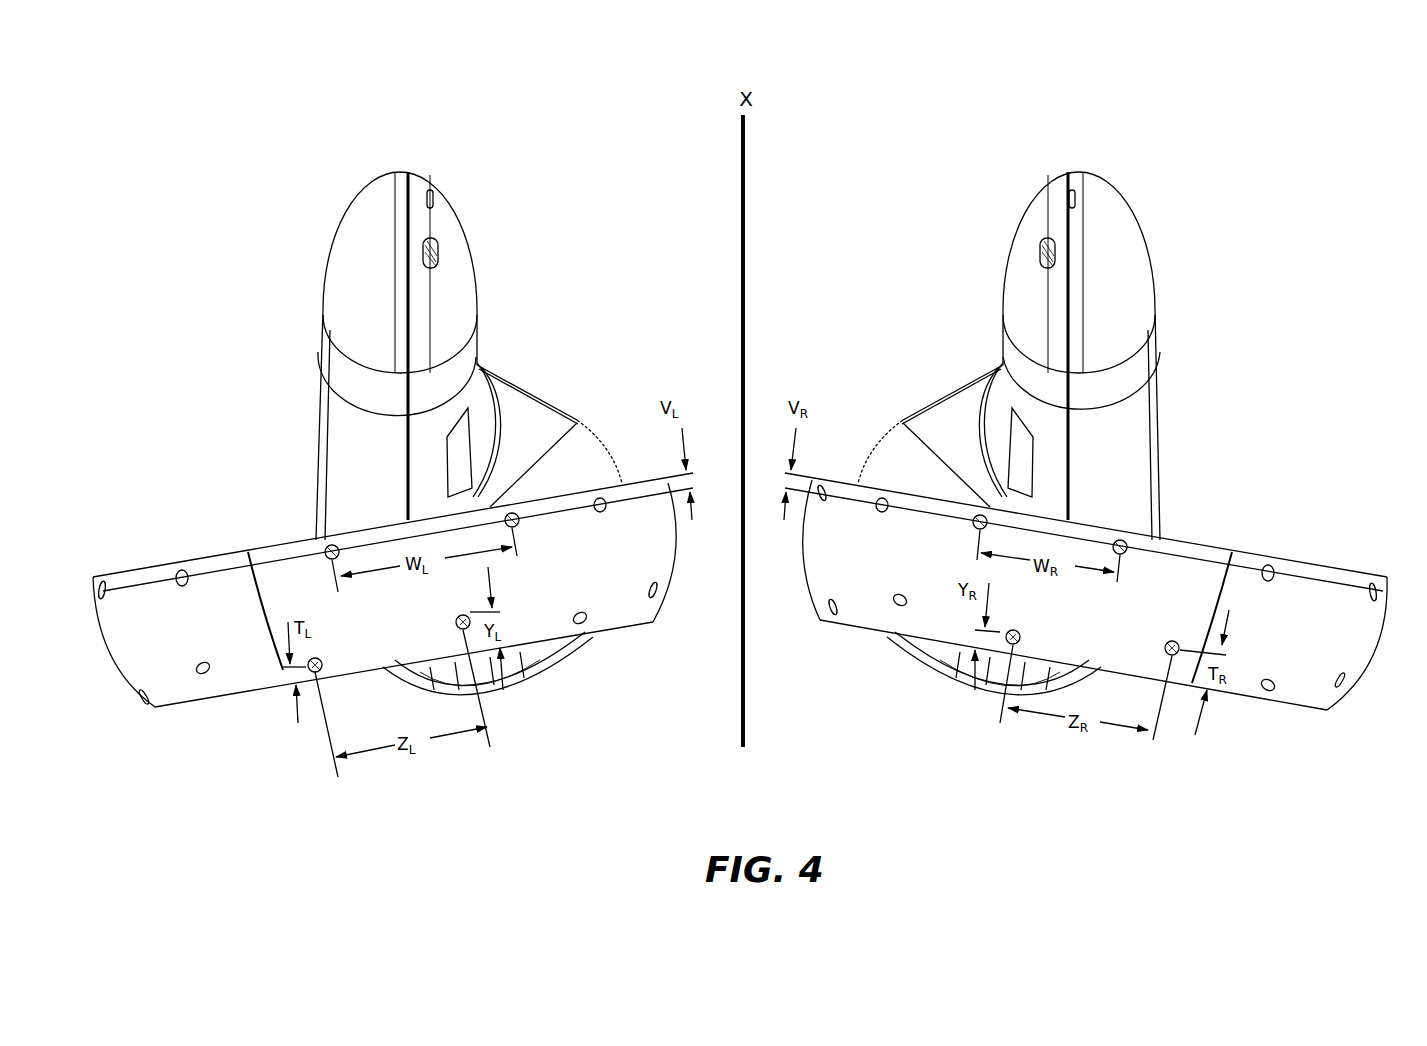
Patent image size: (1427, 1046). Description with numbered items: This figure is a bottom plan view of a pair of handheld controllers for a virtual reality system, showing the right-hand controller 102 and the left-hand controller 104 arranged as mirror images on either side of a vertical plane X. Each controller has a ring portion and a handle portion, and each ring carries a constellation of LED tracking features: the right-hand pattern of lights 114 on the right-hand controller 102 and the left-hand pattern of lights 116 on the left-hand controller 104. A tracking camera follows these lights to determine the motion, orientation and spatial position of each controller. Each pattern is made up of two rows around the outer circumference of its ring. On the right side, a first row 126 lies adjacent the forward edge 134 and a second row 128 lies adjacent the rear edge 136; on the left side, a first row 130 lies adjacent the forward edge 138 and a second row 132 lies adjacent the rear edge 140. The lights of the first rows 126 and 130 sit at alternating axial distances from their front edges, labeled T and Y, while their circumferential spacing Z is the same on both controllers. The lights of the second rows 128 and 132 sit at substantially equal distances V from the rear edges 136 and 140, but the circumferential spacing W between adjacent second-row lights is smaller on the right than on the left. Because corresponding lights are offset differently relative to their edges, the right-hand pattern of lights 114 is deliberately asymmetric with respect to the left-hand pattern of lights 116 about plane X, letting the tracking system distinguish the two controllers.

The right-hand controller 102 is at (1070, 138).
The left-hand controller 104 is at (392, 138).
The right-hand pattern of lights 114 is at (1380, 648).
The left-hand pattern of lights 116 is at (101, 648).
The first row 126 is at (1349, 698).
The second row 128 is at (1389, 592).
The first row 130 is at (141, 696).
The second row 132 is at (96, 592).
The forward edge 134 is at (1252, 696).
The rear edge 136 is at (1318, 562).
The forward edge 138 is at (180, 705).
The rear edge 140 is at (158, 572).